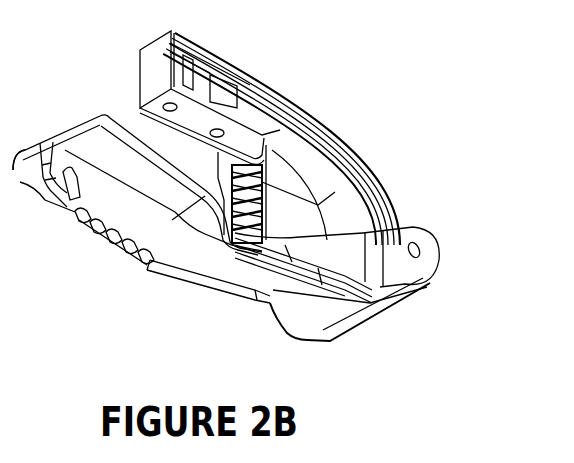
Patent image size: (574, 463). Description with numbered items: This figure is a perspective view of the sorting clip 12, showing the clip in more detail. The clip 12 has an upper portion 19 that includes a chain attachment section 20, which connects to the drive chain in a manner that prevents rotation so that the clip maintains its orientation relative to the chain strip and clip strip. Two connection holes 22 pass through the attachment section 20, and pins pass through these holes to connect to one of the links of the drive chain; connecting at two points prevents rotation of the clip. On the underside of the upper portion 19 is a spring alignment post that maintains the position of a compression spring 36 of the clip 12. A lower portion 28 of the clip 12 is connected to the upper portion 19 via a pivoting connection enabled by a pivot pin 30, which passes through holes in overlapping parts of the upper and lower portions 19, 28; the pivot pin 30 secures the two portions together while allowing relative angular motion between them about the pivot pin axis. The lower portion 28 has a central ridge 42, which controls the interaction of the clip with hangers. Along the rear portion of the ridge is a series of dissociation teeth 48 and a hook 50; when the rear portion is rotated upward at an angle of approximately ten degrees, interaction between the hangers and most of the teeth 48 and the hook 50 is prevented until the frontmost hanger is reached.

The sorting clip 12 is at (136, 308).
The upper portion 19 is at (297, 116).
The chain attachment section 20 is at (141, 49).
The connection holes 22 is at (208, 136).
The lower portion 28 is at (262, 297).
The pivot pin 30 is at (418, 242).
The compression spring 36 is at (266, 213).
The central ridge 42 is at (200, 283).
The dissociation teeth 48 is at (147, 260).
The hook 50 is at (56, 206).